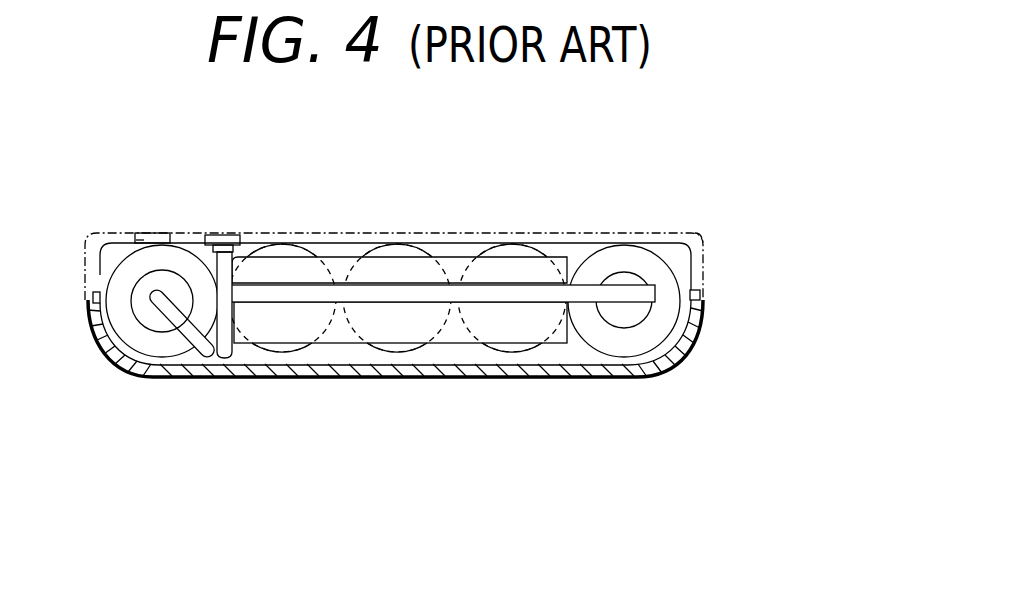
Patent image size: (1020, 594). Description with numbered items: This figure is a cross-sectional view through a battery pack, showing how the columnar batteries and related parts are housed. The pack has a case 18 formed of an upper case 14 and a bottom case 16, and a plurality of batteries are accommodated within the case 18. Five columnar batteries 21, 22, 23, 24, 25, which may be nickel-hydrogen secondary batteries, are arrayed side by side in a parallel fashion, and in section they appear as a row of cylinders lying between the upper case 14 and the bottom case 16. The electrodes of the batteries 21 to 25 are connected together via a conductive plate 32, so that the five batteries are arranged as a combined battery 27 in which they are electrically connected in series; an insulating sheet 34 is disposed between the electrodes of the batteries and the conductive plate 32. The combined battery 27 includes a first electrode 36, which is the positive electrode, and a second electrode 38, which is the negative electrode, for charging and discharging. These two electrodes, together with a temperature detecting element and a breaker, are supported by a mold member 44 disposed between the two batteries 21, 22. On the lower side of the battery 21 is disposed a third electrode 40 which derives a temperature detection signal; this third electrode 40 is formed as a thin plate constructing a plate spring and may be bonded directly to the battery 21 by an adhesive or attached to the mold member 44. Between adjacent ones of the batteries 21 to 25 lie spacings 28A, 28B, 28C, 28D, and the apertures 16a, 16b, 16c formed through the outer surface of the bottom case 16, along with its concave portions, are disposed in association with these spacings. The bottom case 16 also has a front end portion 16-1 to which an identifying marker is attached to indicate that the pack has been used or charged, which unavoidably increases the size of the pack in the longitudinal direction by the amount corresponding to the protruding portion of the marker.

The upper case 14 is at (785, 285).
The bottom case 16 is at (457, 211).
The front end portion 16-1 is at (703, 247).
The aperture 16a is at (220, 235).
The aperture 16b is at (339, 175).
The aperture 16c is at (152, 233).
The case 18 is at (458, 242).
The battery 21 is at (168, 347).
The battery 22 is at (290, 347).
The battery 23 is at (400, 347).
The battery 24 is at (513, 348).
The battery 25 is at (625, 345).
The combined battery 27 is at (393, 377).
The spacing 28A is at (240, 252).
The spacing 28B is at (358, 348).
The spacing 28C is at (423, 348).
The spacing 28D is at (499, 347).
The conductive plate 32 is at (196, 243).
The insulating sheet 34 is at (540, 322).
The first electrode 36 is at (255, 305).
The second electrode 38 is at (255, 305).
The third electrode 40 is at (140, 242).
The mold member 44 is at (224, 348).